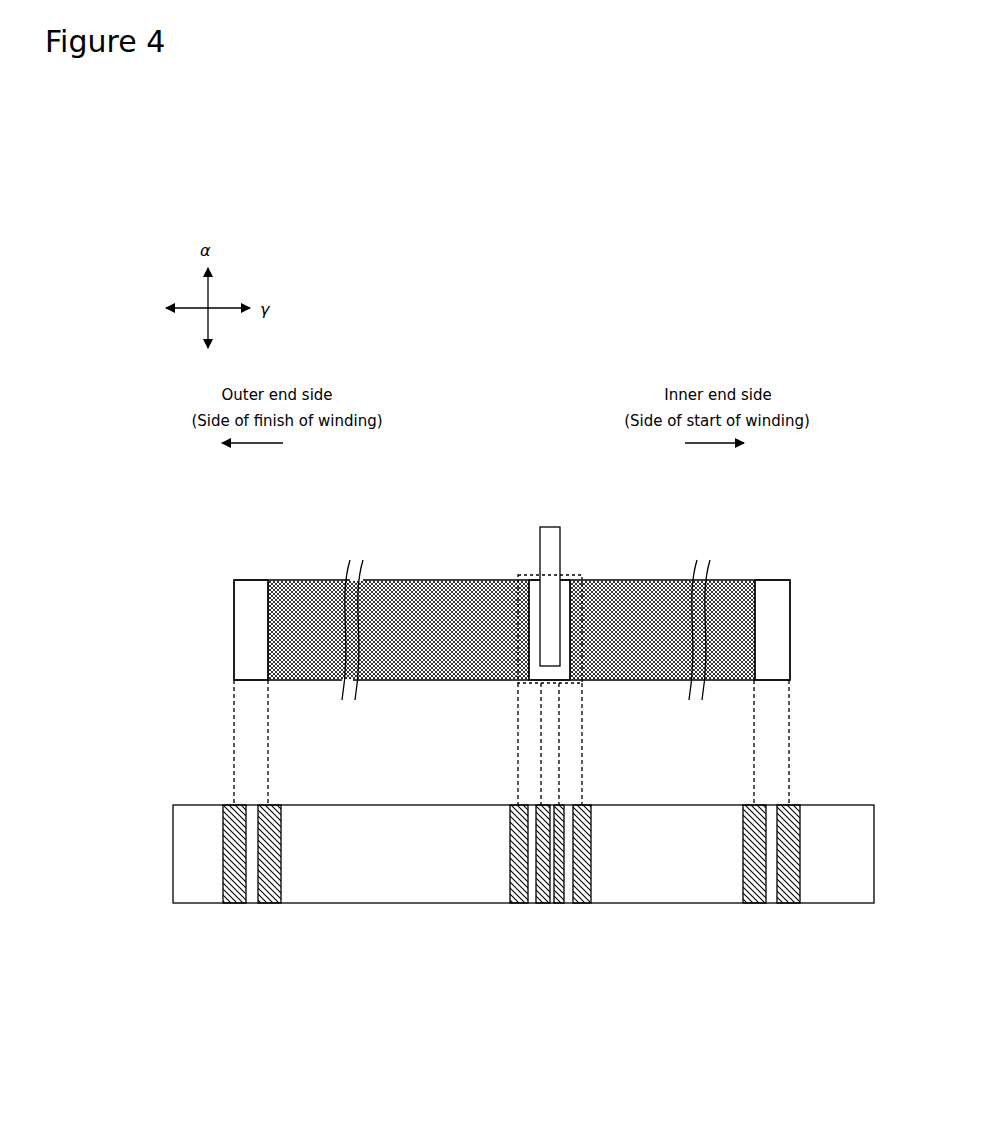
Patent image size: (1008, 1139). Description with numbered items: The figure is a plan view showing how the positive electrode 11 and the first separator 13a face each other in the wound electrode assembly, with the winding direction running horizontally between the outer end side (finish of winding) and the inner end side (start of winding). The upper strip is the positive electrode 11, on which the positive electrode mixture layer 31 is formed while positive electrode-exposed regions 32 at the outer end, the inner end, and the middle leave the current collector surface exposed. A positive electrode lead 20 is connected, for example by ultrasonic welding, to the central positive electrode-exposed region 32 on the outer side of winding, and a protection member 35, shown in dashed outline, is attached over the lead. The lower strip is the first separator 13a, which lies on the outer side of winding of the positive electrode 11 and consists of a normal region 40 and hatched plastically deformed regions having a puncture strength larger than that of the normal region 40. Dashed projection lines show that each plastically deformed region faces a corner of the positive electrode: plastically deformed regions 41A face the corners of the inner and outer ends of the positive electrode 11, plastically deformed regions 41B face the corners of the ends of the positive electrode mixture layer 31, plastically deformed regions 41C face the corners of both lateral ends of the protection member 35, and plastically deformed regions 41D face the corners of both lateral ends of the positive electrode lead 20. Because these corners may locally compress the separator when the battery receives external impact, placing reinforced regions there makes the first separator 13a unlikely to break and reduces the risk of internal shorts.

The positive electrode 11 is at (778, 580).
The first separator 13a is at (843, 805).
The positive electrode lead 20 is at (549, 540).
The positive electrode mixture layer 31 is at (411, 660).
The positive electrode-exposed region 32 is at (252, 660).
The protection member 35 is at (575, 578).
The normal region 40 is at (192, 890).
The plastically deformed region 41A is at (240, 896).
The plastically deformed region 41B is at (270, 896).
The plastically deformed region 41C is at (518, 896).
The plastically deformed region 41D is at (543, 896).